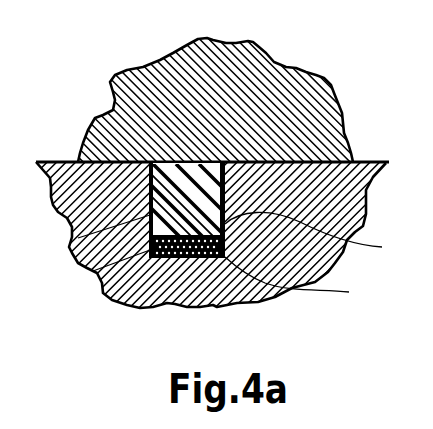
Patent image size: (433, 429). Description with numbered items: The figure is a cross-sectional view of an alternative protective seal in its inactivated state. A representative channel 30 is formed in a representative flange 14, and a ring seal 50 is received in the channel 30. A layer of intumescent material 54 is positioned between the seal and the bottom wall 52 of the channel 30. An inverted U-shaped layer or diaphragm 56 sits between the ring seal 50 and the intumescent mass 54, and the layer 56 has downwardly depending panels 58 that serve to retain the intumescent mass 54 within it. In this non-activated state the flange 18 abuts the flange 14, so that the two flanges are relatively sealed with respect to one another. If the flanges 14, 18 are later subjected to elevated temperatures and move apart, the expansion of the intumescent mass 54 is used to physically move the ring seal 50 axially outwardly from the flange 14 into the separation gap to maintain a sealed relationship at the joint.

The flange 18 is at (234, 70).
The flange 14 is at (341, 205).
The ring seal 50 is at (78, 238).
The inverted U-shaped layer or diaphragm 56 is at (319, 237).
The downwardly depending panels 58 is at (93, 271).
The layer of intumescent material 54 is at (157, 259).
The bottom wall 52 is at (186, 260).
The channel 30 is at (205, 260).